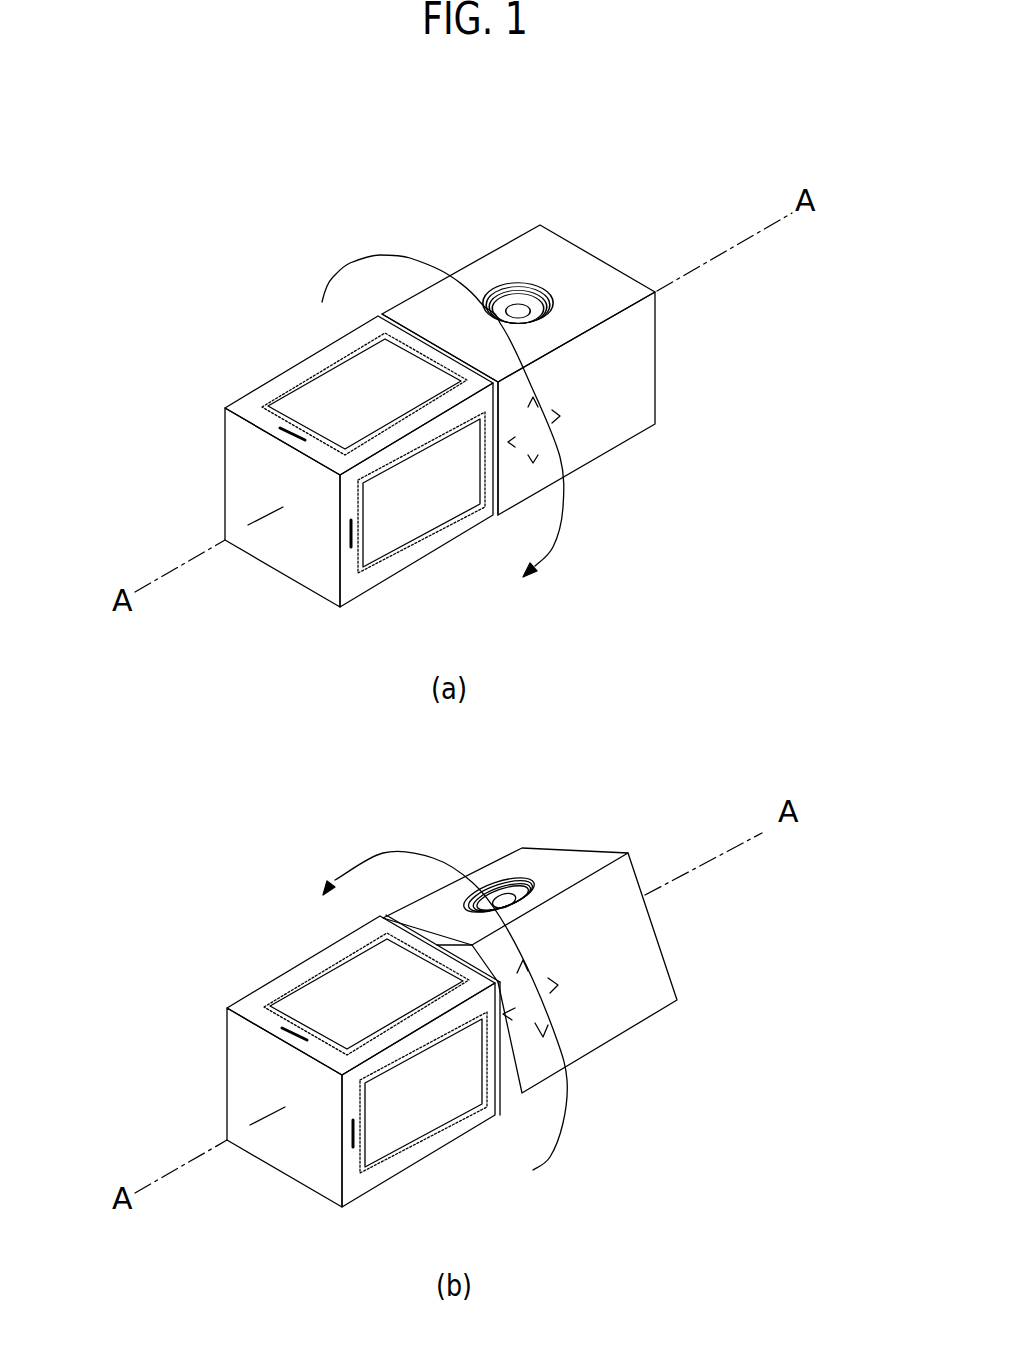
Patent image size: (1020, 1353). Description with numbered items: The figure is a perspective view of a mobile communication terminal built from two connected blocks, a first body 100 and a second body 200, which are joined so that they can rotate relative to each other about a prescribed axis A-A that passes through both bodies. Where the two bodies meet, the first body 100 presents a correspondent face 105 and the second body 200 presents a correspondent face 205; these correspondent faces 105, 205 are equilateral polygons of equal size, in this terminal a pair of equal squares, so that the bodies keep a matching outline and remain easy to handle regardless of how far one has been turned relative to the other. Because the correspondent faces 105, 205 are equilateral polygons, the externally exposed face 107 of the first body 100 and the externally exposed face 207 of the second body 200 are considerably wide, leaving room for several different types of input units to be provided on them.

The first body 100 is at (282, 396).
The second body 200 is at (573, 262).
The correspondent face 105 is at (388, 915).
The externally exposed face 107 is at (317, 960).
The correspondent face 205 is at (513, 1083).
The externally exposed face 207 is at (522, 856).